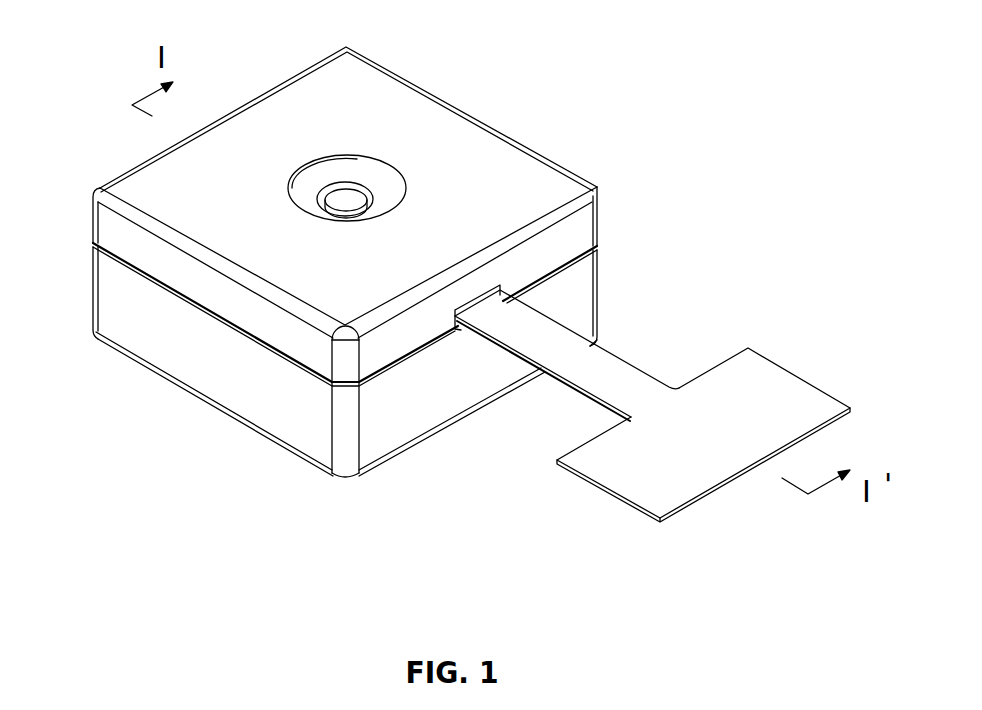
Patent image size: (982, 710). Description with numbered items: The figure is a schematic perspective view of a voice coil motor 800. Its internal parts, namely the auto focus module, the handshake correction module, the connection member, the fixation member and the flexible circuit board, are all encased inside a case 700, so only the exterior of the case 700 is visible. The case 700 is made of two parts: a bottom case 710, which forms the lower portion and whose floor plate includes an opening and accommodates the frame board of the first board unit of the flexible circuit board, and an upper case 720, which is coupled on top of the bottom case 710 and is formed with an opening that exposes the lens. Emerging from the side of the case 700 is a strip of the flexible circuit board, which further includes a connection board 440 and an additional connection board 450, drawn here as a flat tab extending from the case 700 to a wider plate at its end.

The voice coil motor 800 is at (492, 107).
The case 700 is at (115, 446).
The upper case 720 is at (172, 272).
The bottom case 710 is at (213, 380).
The additional connection board 450 is at (593, 485).
The connection board 440 is at (683, 491).